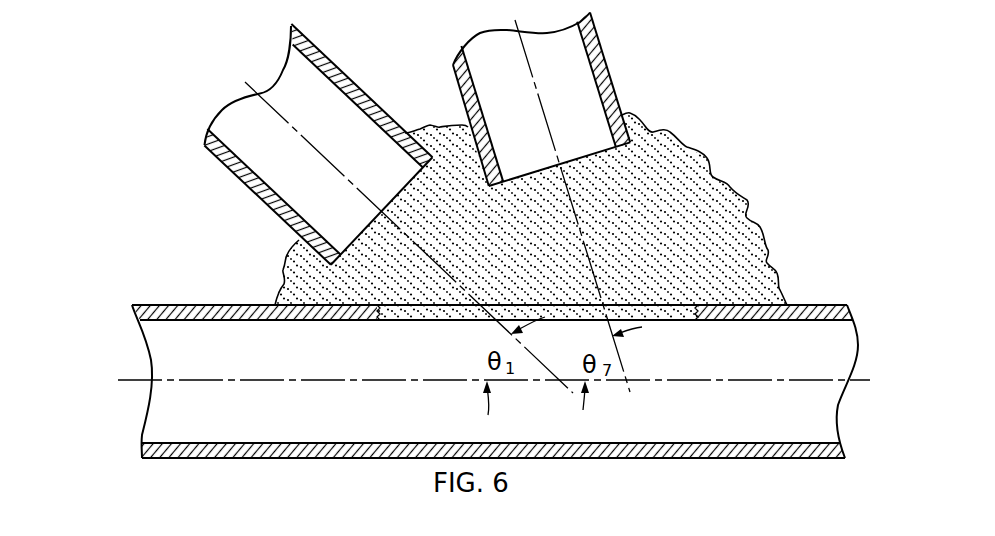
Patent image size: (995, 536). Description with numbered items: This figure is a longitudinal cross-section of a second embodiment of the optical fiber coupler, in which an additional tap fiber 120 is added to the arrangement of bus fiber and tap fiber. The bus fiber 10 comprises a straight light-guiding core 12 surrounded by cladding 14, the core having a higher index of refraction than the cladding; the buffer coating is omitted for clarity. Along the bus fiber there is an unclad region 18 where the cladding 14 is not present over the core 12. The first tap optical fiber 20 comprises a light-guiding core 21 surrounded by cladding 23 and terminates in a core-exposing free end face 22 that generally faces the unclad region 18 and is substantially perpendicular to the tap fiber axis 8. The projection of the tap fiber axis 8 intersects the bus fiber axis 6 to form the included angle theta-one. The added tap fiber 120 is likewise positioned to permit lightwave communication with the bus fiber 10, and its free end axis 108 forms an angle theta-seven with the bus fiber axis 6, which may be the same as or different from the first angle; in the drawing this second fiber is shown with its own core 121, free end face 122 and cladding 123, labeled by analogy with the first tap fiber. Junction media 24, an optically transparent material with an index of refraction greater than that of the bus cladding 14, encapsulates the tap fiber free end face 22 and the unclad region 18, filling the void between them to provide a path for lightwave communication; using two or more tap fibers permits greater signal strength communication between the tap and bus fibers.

The bus fiber axis 6 is at (293, 381).
The tap optical fiber axis 8 is at (340, 164).
The bus fiber 10 is at (498, 250).
The core 12 is at (494, 379).
The cladding 14 is at (230, 320).
The unclad region 18 is at (420, 320).
The tap optical fiber 20 is at (353, 208).
The core 21 is at (311, 103).
The free end face 22 is at (353, 243).
The cladding 23 is at (277, 218).
The junction media 24 is at (737, 226).
The free end axis 108 is at (532, 58).
The tap fiber 120 is at (568, 200).
The bore of second branch tube 121 is at (508, 76).
The end face of second branch tube 122 is at (603, 150).
The outer surface of second branch tube 123 is at (617, 113).